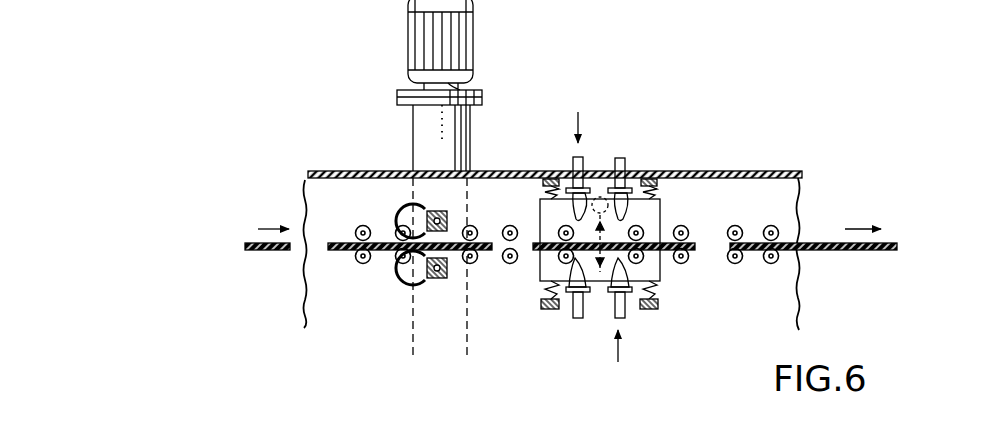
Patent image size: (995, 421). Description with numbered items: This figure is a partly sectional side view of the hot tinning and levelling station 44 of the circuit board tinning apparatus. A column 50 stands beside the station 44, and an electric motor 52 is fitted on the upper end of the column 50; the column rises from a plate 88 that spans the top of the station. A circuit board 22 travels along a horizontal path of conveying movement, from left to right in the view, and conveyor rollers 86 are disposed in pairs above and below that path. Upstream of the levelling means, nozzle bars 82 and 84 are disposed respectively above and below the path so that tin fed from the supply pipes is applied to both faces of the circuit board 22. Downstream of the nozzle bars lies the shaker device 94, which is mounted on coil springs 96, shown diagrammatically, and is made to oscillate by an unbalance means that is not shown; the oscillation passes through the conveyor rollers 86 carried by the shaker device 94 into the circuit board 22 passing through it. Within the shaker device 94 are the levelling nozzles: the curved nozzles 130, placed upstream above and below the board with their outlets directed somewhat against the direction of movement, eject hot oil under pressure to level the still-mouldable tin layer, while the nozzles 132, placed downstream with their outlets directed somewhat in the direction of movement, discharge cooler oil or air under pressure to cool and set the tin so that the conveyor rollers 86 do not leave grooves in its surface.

The electric motor 52 is at (462, 22).
The column 50 is at (473, 124).
The support plate 88 is at (690, 170).
The circuit board 22 is at (486, 242).
The conveyor roller 86 is at (356, 234).
The nozzle bar 82 is at (428, 212).
The nozzle bar 84 is at (433, 283).
The shaker device 94 is at (660, 210).
The nozzle 130 is at (582, 166).
The nozzle 132 is at (624, 170).
The coil spring 96 is at (548, 191).
The hot tinning station 44 is at (514, 392).